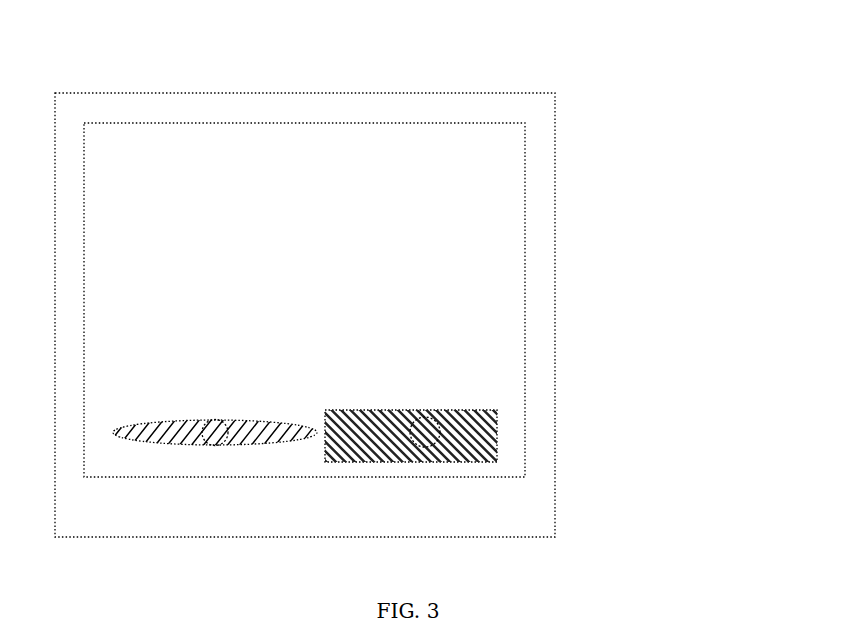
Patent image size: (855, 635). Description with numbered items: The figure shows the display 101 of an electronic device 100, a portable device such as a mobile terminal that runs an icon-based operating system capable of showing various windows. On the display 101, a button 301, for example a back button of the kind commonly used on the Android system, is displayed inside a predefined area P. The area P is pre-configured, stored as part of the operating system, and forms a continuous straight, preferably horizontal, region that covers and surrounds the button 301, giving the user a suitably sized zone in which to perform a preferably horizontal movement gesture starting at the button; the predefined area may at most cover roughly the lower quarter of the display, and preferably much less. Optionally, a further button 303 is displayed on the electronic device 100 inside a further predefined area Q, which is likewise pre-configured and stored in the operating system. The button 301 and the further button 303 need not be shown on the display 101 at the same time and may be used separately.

The electronic device 100 is at (628, 32).
The display 101 is at (231, 157).
The button 301 is at (237, 420).
The further button 303 is at (440, 412).
The predefined area P is at (177, 421).
The further predefined area Q is at (358, 411).